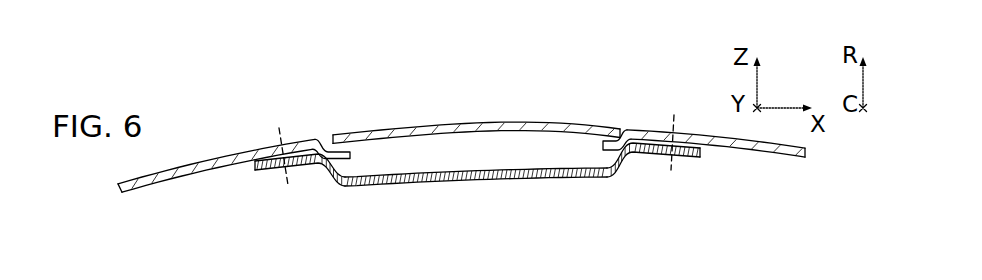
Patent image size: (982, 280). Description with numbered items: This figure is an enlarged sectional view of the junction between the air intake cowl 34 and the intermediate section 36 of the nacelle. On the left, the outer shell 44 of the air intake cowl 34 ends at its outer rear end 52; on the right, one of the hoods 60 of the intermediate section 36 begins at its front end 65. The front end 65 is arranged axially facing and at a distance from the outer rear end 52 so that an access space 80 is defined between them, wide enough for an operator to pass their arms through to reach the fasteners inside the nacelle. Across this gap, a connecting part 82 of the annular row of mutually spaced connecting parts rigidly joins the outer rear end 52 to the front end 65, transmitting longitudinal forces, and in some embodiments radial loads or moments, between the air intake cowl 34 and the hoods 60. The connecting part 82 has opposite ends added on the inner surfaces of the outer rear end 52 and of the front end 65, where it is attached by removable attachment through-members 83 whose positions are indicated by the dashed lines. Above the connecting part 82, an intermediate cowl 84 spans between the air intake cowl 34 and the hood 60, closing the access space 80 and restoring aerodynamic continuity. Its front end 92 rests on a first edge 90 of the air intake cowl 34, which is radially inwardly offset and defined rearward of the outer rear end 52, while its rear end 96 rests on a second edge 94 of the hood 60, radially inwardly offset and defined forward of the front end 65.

The air intake cowl 34 is at (234, 141).
The outer shell 44 is at (195, 169).
The outer rear end 52 is at (327, 138).
The intermediate cowl 84 is at (480, 123).
The front end 92 is at (333, 139).
The rear end 96 is at (620, 130).
The access space 80 is at (477, 196).
The first edge 90 is at (334, 180).
The connecting parts 82 is at (471, 180).
The second edges 94 is at (615, 145).
The hoods 60 is at (723, 146).
The intermediate section 36 is at (742, 142).
The front ends 65 is at (625, 131).
The removable attachment through-members 83 is at (288, 183).